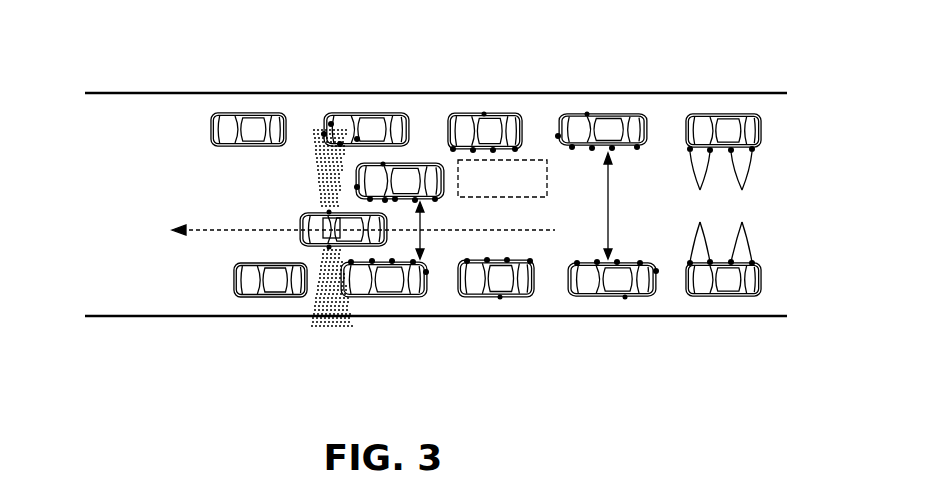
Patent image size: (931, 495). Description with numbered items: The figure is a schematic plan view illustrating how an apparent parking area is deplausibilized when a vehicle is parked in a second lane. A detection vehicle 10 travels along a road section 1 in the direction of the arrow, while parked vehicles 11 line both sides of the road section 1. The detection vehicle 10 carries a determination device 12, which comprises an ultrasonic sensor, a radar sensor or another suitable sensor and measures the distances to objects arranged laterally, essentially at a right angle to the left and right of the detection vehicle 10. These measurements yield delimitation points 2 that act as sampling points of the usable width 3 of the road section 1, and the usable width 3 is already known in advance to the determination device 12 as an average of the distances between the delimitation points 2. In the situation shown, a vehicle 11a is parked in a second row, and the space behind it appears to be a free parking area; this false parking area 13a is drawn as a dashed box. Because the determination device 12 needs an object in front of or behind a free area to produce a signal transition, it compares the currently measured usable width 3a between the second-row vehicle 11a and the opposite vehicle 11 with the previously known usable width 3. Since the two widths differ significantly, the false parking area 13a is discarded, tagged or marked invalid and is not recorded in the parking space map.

The road section 1 is at (129, 93).
The parked vehicle 11 is at (723, 346).
The vehicle parked in a second row 11a is at (418, 160).
The false parking area 13a is at (530, 160).
The detection vehicle 10 is at (300, 214).
The determination device 12 is at (320, 226).
The usable width 3 is at (605, 213).
The currently measured usable width 3a is at (423, 224).
The delimitation points 2 is at (721, 207).